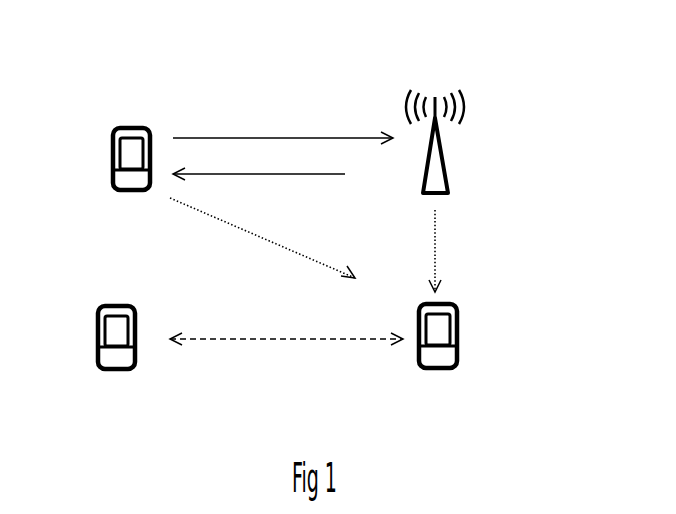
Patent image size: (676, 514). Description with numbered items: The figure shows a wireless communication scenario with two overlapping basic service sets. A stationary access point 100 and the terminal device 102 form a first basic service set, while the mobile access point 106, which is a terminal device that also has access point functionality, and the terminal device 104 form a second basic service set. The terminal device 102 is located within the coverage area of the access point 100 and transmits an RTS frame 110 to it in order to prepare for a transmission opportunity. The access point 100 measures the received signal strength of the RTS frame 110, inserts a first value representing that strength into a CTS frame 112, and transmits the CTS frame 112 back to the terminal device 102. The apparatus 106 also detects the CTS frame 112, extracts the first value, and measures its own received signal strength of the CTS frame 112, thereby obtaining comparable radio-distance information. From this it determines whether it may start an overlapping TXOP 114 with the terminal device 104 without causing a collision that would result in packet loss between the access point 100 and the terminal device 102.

The access point 100 is at (424, 178).
The terminal device 102 is at (120, 133).
The terminal device 104 is at (102, 320).
The mobile access point 106 is at (425, 313).
The RTS frame 110 is at (281, 189).
The CTS frame 112 is at (361, 230).
The overlapping TXOP 114 is at (286, 329).